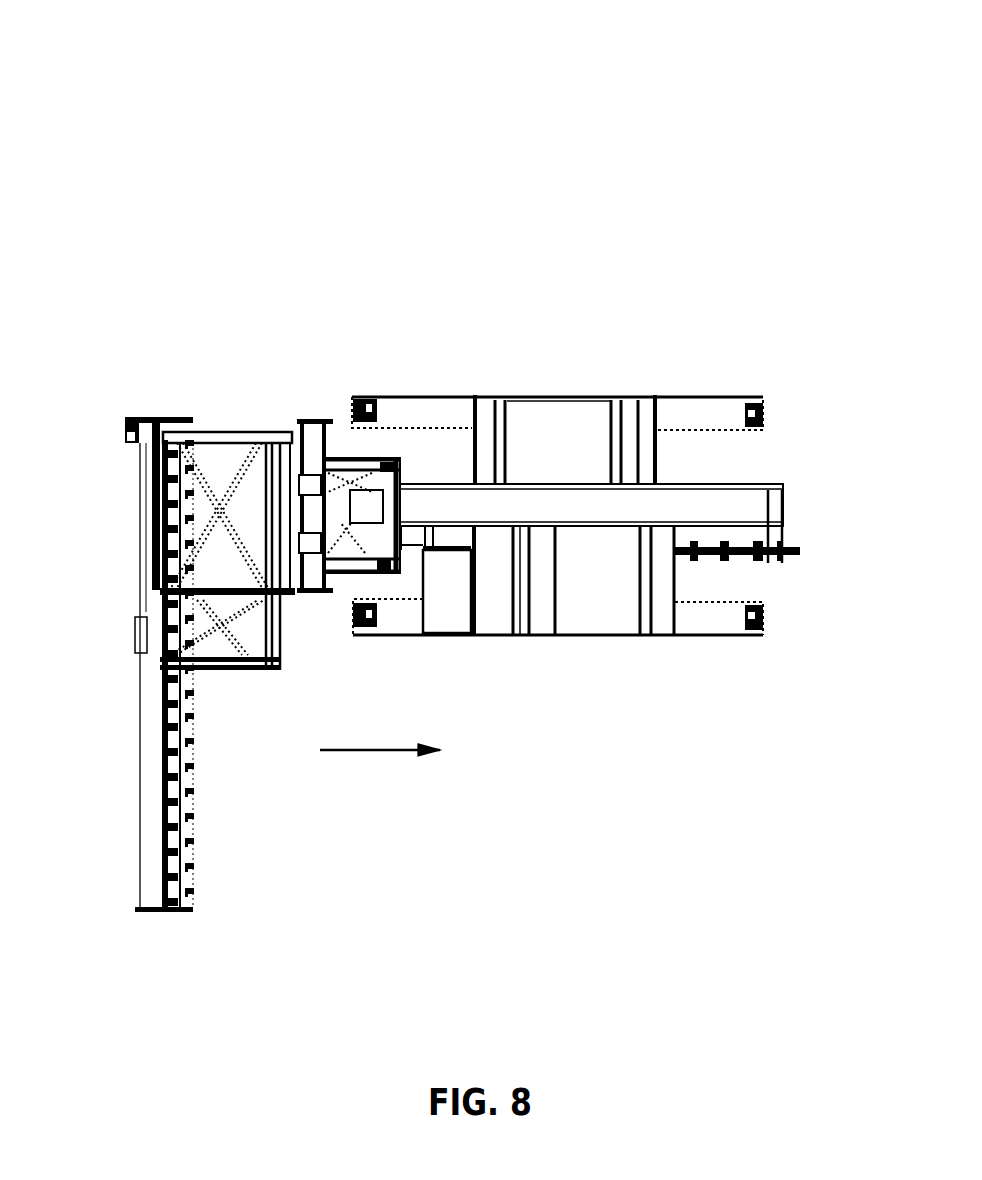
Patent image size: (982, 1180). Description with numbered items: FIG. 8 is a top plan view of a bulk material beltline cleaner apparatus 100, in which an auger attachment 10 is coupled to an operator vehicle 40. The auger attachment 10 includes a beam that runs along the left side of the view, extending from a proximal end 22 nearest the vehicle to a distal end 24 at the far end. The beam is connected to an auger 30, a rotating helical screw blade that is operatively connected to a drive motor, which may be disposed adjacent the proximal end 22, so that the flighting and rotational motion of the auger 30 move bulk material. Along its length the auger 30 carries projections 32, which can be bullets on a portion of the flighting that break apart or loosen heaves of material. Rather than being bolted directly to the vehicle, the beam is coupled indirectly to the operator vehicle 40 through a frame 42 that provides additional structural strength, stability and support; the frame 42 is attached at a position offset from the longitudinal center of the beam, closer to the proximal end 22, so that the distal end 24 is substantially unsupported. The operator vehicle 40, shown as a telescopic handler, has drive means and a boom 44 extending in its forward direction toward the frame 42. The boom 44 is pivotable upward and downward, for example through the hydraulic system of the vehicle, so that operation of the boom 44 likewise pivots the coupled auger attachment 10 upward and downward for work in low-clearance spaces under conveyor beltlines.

The beltline cleaner apparatus 100 is at (535, 310).
The auger attachment 10 is at (168, 347).
The proximal end 22 is at (140, 458).
The distal end 24 is at (137, 893).
The auger 30 is at (183, 758).
The projections 32 is at (183, 855).
The operator vehicle 40 is at (637, 380).
The frame 42 is at (232, 455).
The boom 44 is at (372, 505).